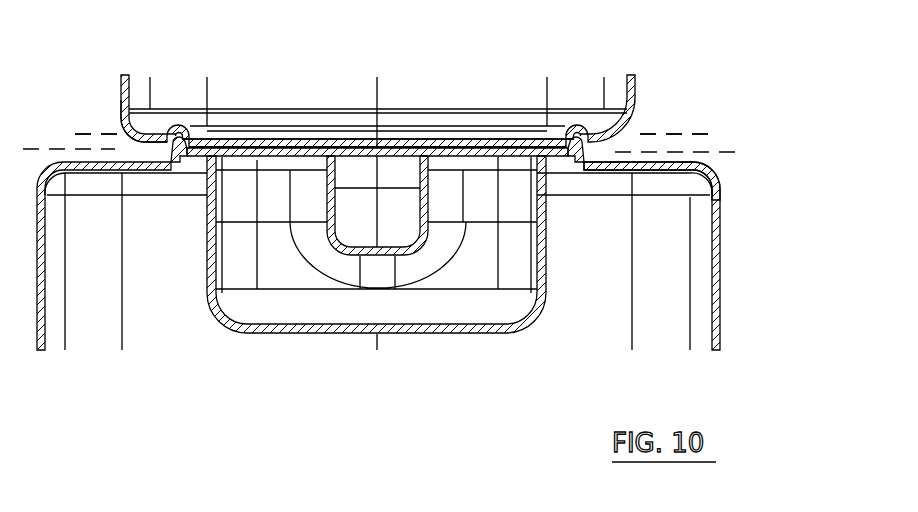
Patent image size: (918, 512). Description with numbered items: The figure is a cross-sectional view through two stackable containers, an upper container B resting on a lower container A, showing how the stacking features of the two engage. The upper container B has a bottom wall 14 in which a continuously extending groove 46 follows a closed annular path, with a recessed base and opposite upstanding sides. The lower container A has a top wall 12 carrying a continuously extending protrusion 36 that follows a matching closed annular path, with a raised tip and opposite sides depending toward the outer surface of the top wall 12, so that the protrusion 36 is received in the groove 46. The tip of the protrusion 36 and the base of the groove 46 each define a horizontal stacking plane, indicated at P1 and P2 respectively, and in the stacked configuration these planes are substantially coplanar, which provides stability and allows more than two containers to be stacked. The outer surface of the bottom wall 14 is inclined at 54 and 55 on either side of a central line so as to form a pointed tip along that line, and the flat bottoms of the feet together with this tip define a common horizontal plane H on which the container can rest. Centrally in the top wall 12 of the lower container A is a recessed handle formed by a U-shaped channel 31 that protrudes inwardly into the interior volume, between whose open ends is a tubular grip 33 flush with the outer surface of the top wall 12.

The container B is at (646, 88).
The container A is at (730, 302).
The bottom wall 14 is at (151, 126).
The groove 46 is at (265, 127).
The inclined outer surface of bottom wall 54 is at (268, 150).
The top wall 12 is at (664, 179).
The inclined outer surface of bottom wall 55 is at (517, 153).
The protrusion 36 is at (572, 155).
The U-shaped channel 31 is at (522, 262).
The tubular grip 33 is at (417, 241).
The horizontal stacking plane P1 is at (705, 133).
The horizontal stacking plane P2 is at (705, 133).
The common horizontal plane H is at (731, 154).